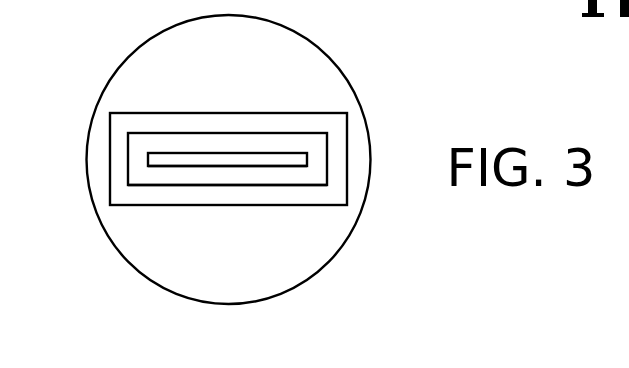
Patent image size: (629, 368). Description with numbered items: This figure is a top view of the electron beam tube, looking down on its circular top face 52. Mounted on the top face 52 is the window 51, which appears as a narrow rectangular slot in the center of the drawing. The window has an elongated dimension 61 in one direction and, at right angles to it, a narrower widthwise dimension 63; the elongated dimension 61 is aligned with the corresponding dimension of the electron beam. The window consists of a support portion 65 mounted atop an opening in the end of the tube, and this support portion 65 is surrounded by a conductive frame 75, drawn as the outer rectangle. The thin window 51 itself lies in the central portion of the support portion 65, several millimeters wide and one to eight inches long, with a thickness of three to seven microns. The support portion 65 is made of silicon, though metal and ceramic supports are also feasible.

The window 51 is at (280, 167).
The top face 52 is at (268, 48).
The elongated dimension 61 is at (157, 185).
The widthwise dimension 63 is at (130, 173).
The support portion 65 is at (152, 143).
The conductive frame 75 is at (120, 158).